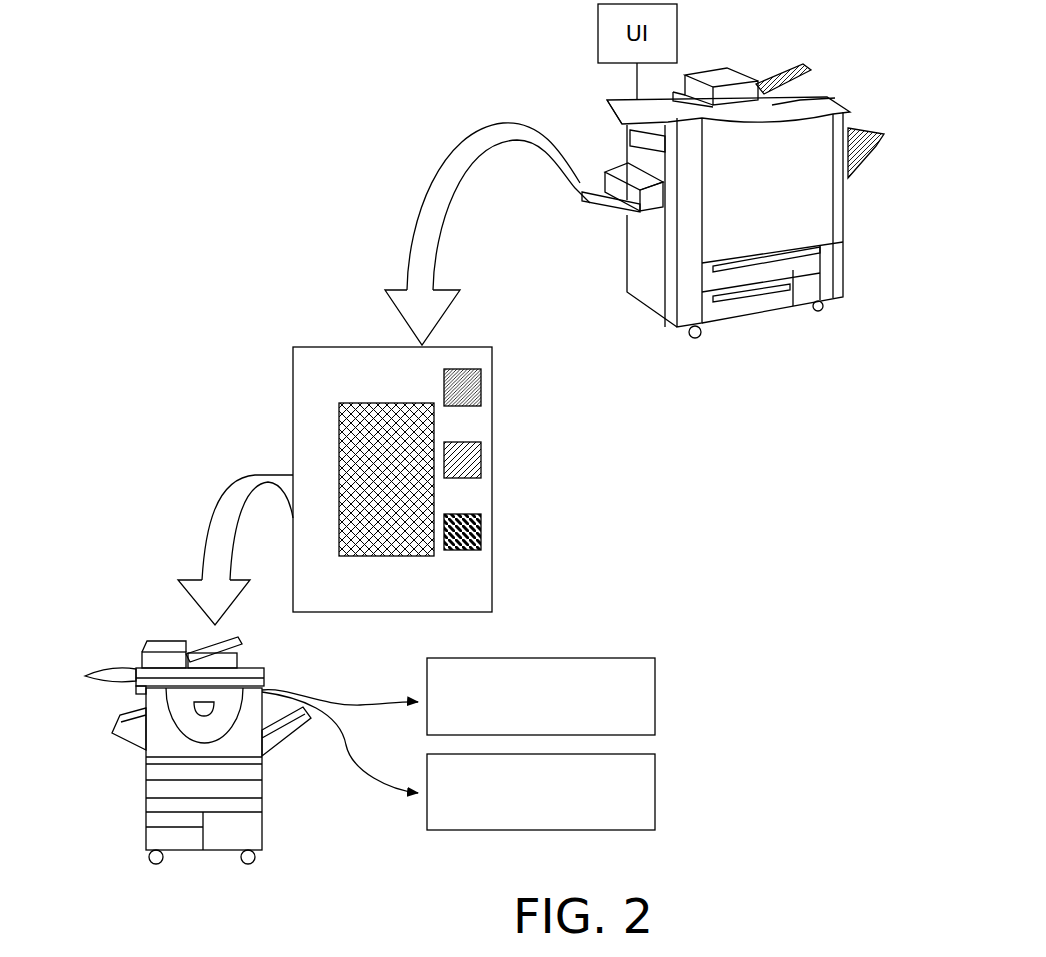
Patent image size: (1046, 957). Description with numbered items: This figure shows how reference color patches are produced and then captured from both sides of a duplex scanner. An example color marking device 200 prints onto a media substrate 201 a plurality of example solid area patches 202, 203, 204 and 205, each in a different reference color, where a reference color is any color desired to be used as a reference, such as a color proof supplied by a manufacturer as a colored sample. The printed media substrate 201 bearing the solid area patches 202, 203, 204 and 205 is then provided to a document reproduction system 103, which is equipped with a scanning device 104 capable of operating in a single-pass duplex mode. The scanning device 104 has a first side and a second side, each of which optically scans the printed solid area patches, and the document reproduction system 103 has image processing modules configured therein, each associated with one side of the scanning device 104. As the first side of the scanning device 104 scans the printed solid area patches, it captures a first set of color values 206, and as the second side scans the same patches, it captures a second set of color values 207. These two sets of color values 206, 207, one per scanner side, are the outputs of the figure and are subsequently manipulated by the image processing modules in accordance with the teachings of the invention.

The color marking device 200 is at (584, 89).
The media substrate 201 is at (292, 394).
The solid area patch 202 is at (482, 385).
The solid area patch 203 is at (482, 458).
The solid area patch 204 is at (482, 531).
The solid area patch 205 is at (372, 557).
The document reproduction system 103 is at (144, 629).
The scanning device 104 is at (144, 713).
The first set of color values 206 is at (656, 693).
The second set of color values 207 is at (656, 790).